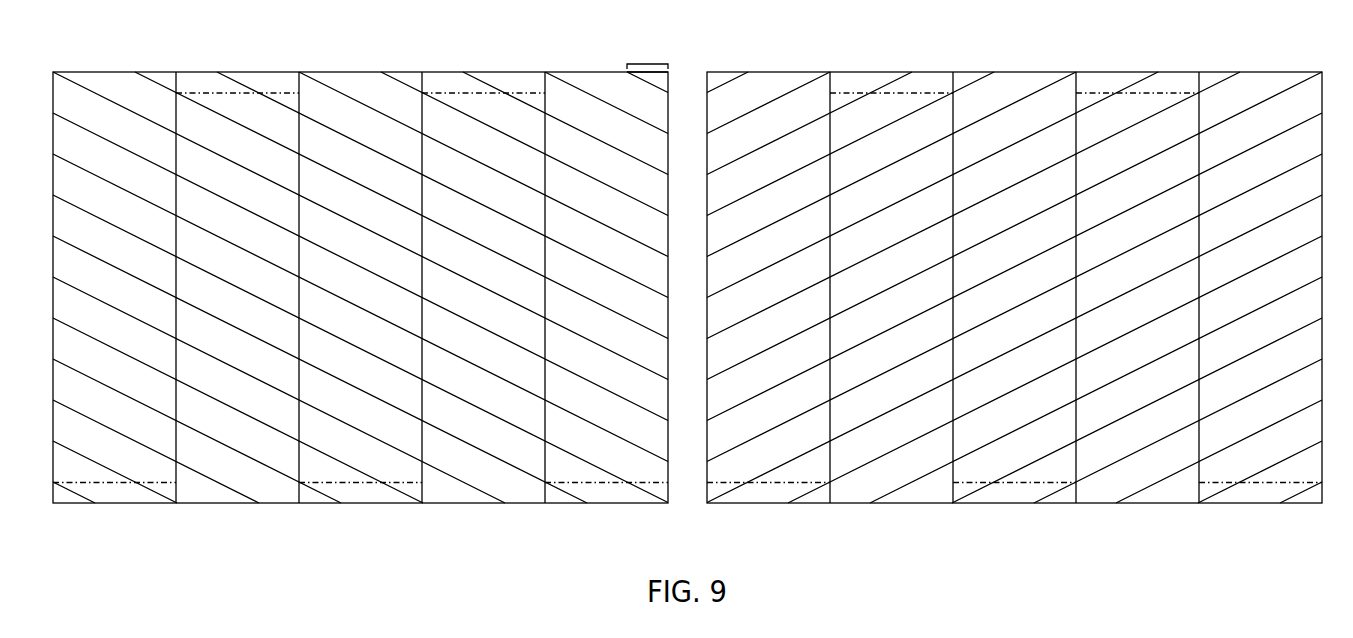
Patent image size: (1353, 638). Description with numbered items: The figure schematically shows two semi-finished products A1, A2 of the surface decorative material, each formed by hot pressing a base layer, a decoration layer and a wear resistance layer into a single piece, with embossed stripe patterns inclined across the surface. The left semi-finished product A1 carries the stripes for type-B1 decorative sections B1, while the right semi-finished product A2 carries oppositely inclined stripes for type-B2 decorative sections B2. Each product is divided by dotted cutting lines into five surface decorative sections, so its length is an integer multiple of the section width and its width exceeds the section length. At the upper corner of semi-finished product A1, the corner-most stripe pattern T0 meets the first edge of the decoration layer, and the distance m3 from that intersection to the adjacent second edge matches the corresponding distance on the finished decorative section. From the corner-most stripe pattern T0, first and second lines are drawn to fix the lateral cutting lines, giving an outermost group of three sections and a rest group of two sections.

The semi-finished product A1 is at (381, 271).
The semi-finished product A2 is at (1014, 272).
The type-B1 decorative section B1 is at (360, 287).
The type-B2 decorative section B2 is at (1014, 289).
The distance m3 is at (647, 52).
The corner-most stripe pattern T0 is at (657, 82).